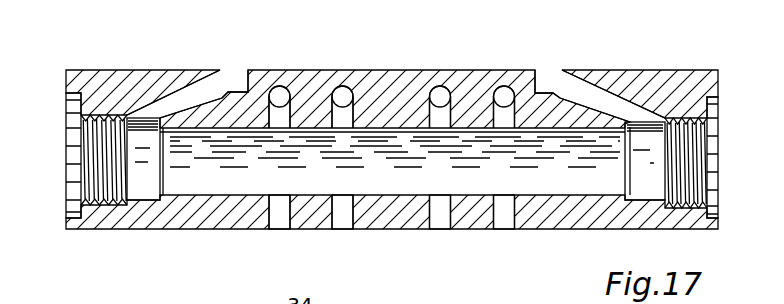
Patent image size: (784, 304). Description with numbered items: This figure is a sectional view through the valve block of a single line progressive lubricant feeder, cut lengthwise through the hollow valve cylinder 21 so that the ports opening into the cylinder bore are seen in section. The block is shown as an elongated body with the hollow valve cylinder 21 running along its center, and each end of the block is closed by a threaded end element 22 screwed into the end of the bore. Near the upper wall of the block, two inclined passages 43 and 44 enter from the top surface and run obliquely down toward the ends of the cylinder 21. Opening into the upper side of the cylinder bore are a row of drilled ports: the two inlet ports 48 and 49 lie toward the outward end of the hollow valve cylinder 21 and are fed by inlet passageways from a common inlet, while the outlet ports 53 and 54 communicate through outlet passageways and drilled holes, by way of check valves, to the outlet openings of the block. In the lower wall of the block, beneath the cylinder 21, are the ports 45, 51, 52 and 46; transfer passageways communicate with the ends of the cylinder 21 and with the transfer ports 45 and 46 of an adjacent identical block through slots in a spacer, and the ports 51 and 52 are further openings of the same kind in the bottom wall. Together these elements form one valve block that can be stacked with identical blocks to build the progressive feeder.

The hollow valve cylinder 21 is at (188, 180).
The threaded end plug 22 is at (88, 188).
The inclined inlet passage 43 is at (170, 107).
The inclined outlet passage 44 is at (613, 103).
The transfer port 45 is at (280, 200).
The transfer port 46 is at (504, 200).
The inlet port 48 is at (280, 122).
The inlet port 49 is at (505, 123).
The bottom slot 51 is at (347, 200).
The bottom slot 52 is at (446, 200).
The outlet port 53 is at (343, 122).
The outlet port 54 is at (441, 122).